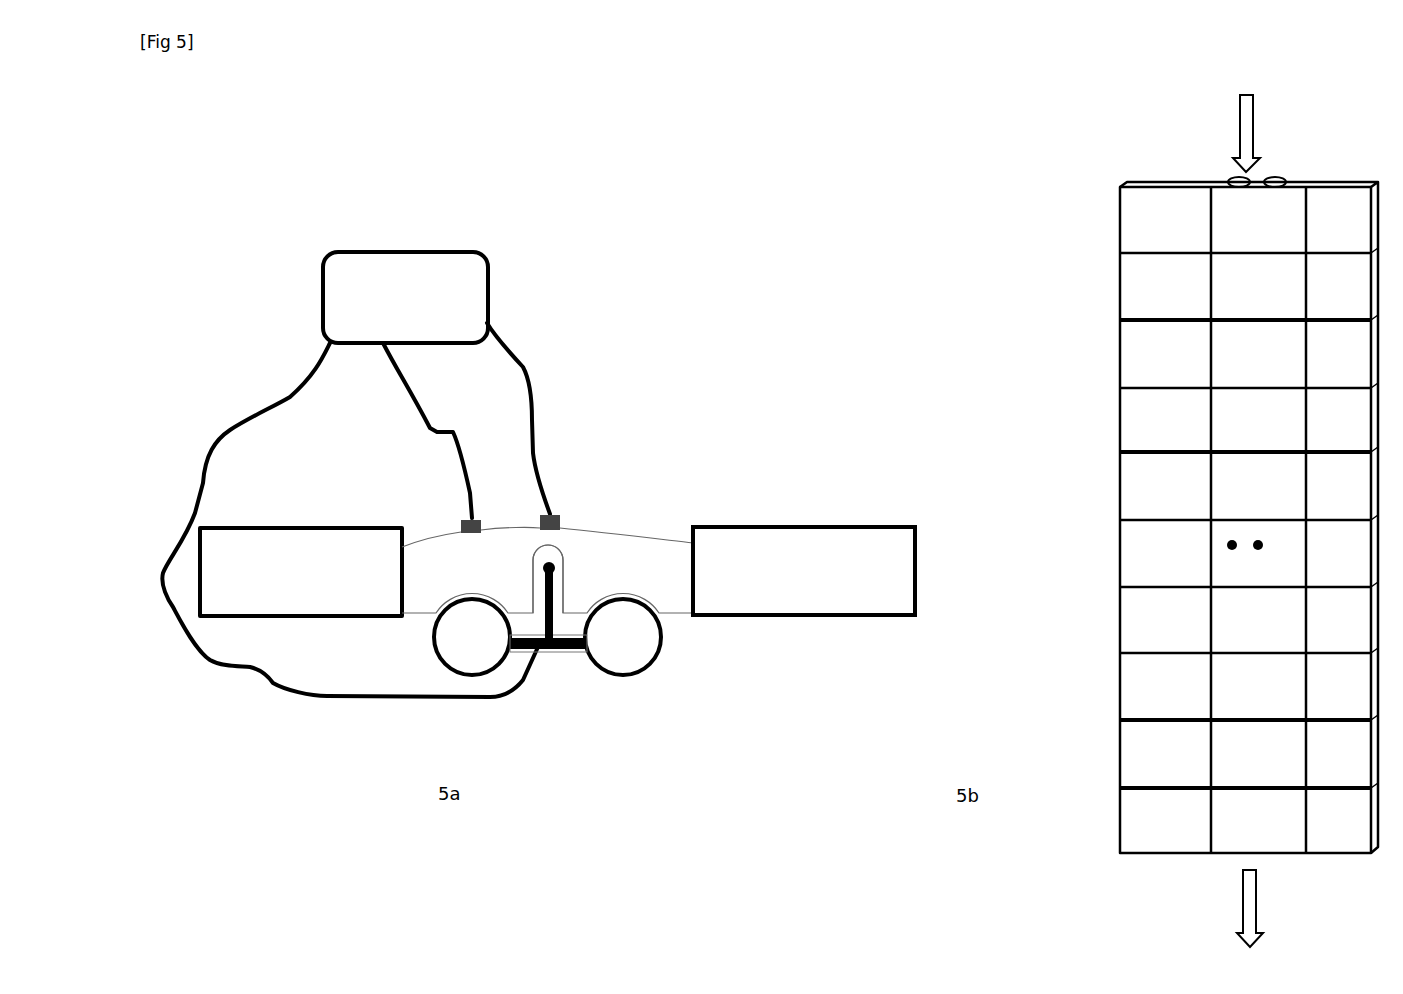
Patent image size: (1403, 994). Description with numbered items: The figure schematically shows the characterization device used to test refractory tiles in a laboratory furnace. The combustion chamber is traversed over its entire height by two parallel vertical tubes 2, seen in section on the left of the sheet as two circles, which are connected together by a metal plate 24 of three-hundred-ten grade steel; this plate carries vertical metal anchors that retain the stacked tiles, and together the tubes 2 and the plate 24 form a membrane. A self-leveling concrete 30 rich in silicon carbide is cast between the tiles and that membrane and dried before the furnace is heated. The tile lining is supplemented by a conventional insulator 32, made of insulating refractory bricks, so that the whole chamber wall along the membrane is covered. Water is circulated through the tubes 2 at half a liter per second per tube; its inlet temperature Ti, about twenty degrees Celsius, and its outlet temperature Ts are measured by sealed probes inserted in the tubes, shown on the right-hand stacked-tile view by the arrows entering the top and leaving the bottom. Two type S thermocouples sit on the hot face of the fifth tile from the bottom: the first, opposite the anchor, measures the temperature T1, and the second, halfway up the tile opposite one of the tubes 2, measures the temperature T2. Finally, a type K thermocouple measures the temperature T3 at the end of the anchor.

The vertical tubes 2 is at (653, 660).
The metal plate 24 is at (552, 652).
The self-leveling concrete 30 is at (565, 625).
The insulator 32 is at (803, 595).
The temperature T1 is at (1254, 543).
The temperature T2 is at (1228, 545).
The temperature T3 is at (326, 670).
The inlet temperature Ti is at (1269, 133).
The outlet temperature Ts is at (1267, 908).